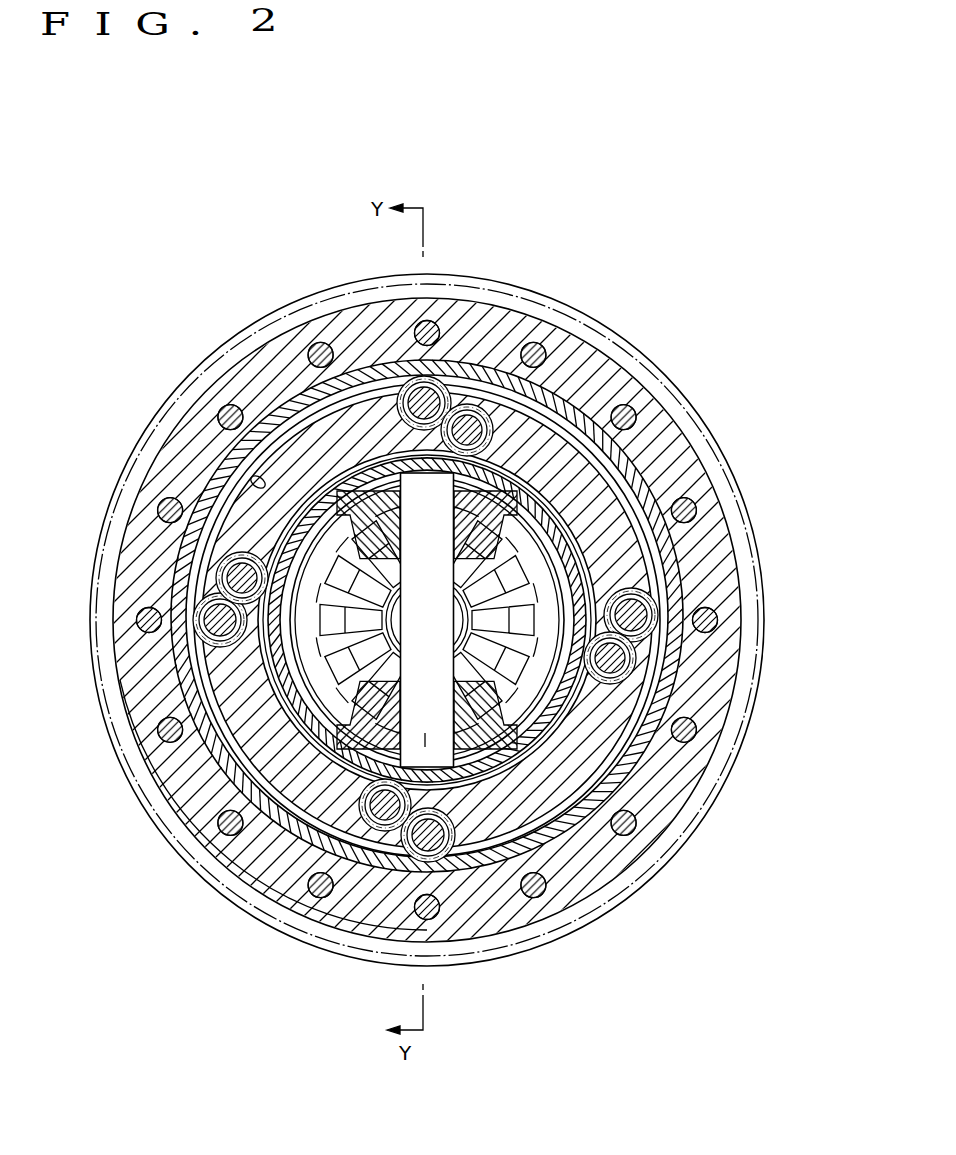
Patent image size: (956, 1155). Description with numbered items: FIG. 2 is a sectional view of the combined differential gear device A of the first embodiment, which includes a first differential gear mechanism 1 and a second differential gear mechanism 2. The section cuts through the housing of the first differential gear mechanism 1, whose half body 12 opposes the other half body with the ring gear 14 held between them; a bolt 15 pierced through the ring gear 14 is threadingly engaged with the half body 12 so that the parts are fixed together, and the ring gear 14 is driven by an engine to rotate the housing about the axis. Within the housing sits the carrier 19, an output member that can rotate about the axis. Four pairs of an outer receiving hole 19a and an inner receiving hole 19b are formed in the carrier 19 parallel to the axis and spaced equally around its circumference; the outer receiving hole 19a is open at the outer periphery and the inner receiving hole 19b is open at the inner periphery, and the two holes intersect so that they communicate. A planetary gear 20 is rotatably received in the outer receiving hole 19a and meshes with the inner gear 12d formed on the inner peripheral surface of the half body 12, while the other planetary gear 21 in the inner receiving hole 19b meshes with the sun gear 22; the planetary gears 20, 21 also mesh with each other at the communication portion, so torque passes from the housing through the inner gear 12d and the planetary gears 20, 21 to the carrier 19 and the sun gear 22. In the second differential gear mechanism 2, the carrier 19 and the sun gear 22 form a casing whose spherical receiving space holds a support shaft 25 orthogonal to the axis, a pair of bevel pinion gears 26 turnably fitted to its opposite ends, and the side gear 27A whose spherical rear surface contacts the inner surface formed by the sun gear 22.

The combined differential gear device A is at (597, 213).
The first differential gear mechanism 1 is at (633, 453).
The second differential gear mechanism 2 is at (590, 790).
The half body 12 is at (597, 372).
The inner gear 12d is at (256, 480).
The ring gear 14 is at (548, 281).
The bolt 15 is at (217, 412).
The carrier 19 is at (593, 507).
The outer receiving hole 19a is at (408, 392).
The inner receiving hole 19b is at (492, 420).
The planetary gear 20 is at (407, 386).
The planetary gear 21 is at (463, 398).
The sun gear 22 is at (525, 760).
The support shaft 25 is at (195, 800).
The pinion gear 26 is at (362, 482).
The side gear 27A is at (640, 785).